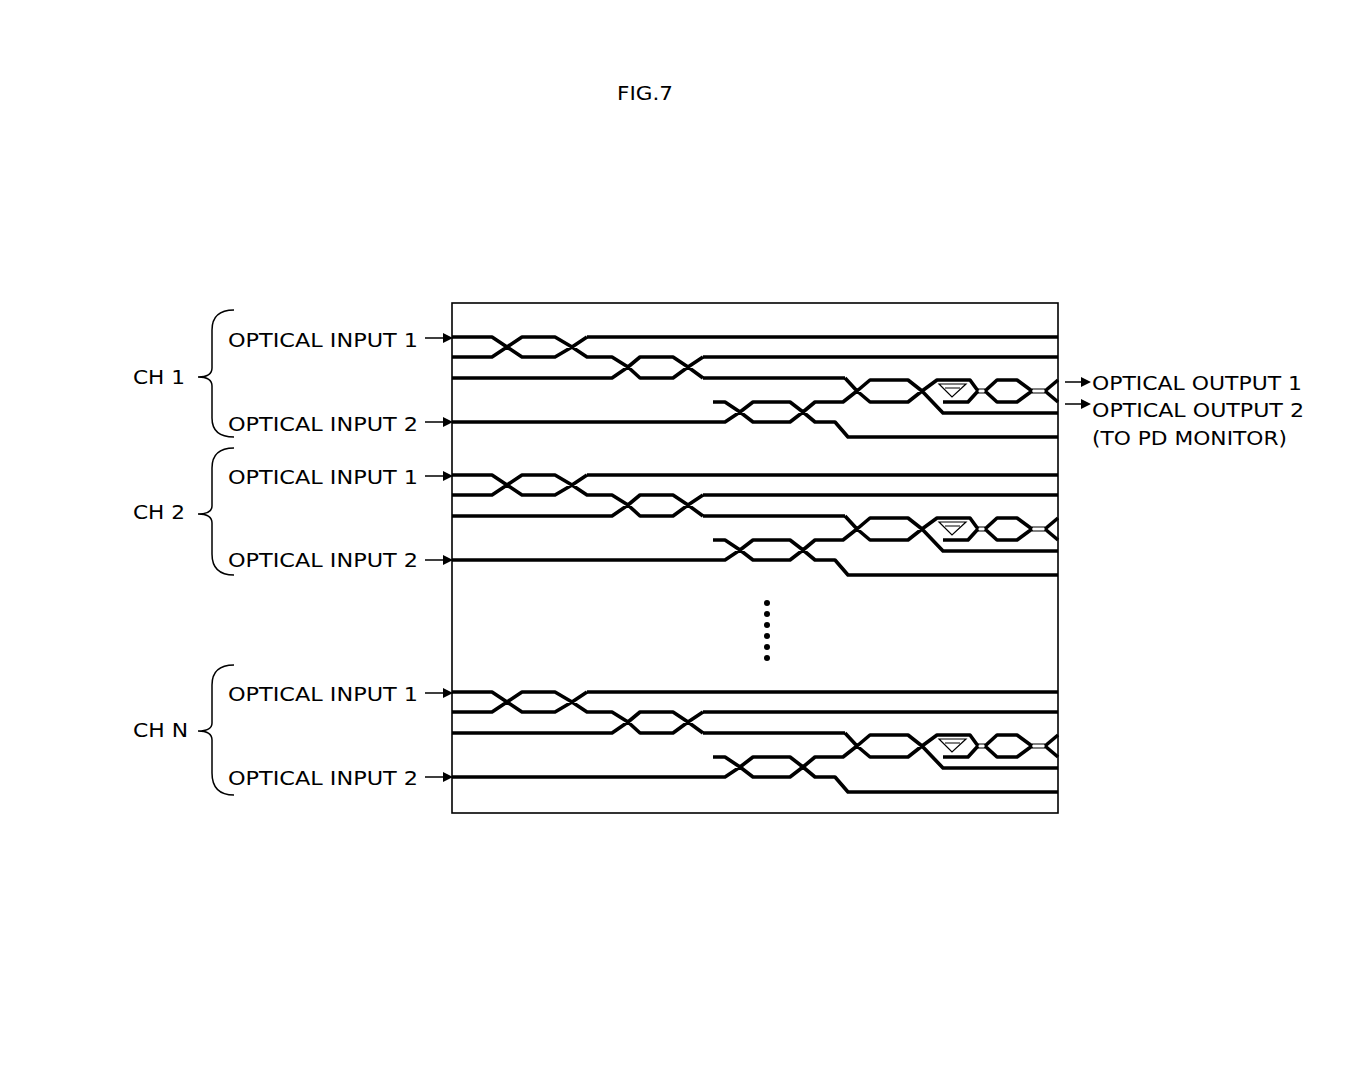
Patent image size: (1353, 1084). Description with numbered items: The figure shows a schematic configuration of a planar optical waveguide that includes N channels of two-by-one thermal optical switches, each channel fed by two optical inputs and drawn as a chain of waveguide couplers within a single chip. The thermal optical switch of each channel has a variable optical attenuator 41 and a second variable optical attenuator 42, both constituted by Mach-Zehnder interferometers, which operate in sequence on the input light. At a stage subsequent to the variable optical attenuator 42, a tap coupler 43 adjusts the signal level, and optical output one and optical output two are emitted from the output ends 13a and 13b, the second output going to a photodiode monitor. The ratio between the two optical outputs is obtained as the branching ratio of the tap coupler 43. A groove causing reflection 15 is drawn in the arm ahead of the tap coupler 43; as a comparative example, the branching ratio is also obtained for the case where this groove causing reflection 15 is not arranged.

The variable optical attenuator 41 is at (662, 357).
The variable optical attenuator 42 is at (888, 405).
The groove causing reflection 15 is at (951, 383).
The tap coupler 43 is at (1005, 380).
The output end 13a is at (1058, 375).
The output end 13b is at (1058, 407).